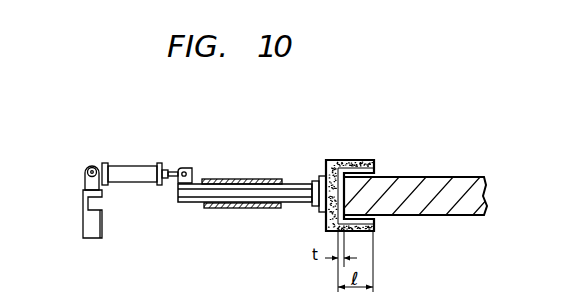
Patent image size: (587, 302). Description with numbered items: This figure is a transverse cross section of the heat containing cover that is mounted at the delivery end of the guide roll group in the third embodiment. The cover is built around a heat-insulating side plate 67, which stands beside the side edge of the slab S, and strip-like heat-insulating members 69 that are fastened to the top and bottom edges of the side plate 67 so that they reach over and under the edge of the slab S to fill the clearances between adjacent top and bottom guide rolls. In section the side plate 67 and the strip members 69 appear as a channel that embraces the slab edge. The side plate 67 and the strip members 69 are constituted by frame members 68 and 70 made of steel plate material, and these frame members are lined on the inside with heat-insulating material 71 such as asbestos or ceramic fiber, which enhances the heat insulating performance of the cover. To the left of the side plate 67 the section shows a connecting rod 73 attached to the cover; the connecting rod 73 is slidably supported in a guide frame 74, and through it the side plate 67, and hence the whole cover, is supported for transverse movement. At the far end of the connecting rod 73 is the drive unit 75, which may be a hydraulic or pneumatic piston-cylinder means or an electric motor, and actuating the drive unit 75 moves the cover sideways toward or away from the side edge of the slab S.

The heat-insulating side plate 67 is at (307, 161).
The frame member 68 is at (322, 217).
The strip-like heat-insulating members 69 is at (340, 153).
The frame member 70 is at (363, 160).
The heat-insulating material 71 is at (378, 167).
The connecting rod 73 is at (188, 203).
The guide frame 74 is at (229, 179).
The drive unit 75 is at (134, 163).
The slab S is at (424, 216).